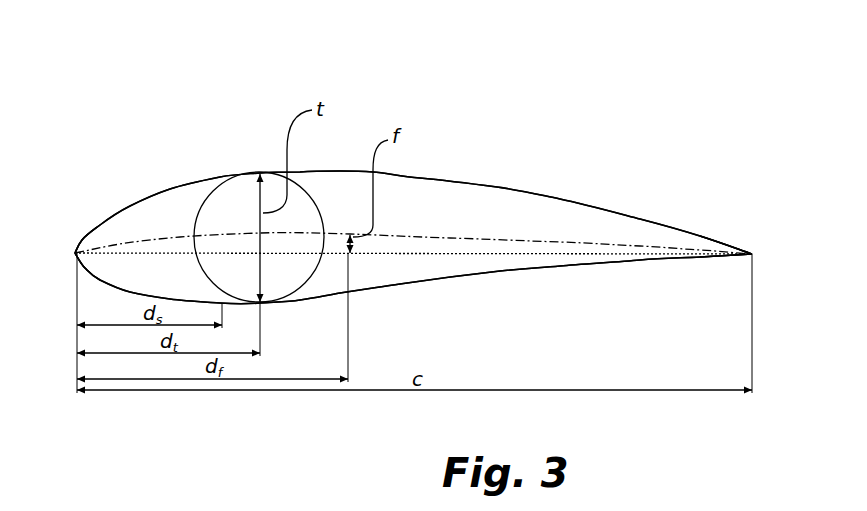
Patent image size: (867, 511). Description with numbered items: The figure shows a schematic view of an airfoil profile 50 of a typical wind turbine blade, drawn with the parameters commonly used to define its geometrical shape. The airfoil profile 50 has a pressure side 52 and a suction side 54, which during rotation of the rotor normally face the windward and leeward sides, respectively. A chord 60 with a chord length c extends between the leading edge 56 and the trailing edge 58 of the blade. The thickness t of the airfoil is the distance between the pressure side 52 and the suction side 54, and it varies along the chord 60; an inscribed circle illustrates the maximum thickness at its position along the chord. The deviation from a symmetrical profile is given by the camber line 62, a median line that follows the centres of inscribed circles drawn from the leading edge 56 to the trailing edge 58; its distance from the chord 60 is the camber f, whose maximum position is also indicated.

The airfoil profile 50 is at (390, 104).
The pressure side 52 is at (547, 274).
The suction side 54 is at (497, 187).
The leading edge 56 is at (76, 252).
The trailing edge 58 is at (752, 252).
The chord 60 is at (578, 250).
The camber line 62 is at (403, 233).